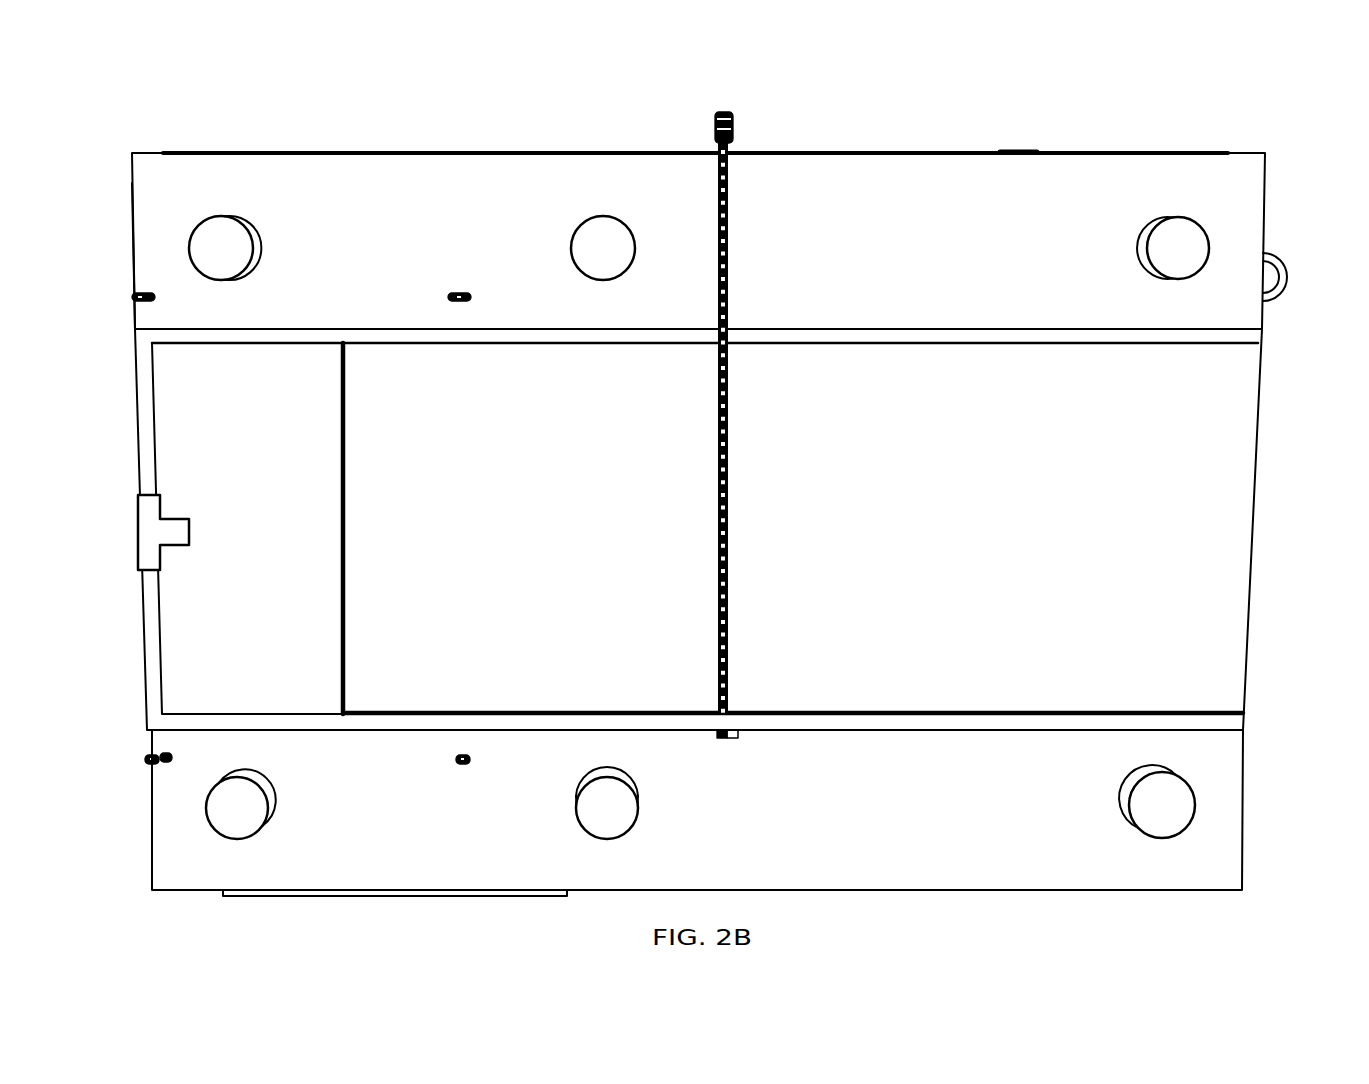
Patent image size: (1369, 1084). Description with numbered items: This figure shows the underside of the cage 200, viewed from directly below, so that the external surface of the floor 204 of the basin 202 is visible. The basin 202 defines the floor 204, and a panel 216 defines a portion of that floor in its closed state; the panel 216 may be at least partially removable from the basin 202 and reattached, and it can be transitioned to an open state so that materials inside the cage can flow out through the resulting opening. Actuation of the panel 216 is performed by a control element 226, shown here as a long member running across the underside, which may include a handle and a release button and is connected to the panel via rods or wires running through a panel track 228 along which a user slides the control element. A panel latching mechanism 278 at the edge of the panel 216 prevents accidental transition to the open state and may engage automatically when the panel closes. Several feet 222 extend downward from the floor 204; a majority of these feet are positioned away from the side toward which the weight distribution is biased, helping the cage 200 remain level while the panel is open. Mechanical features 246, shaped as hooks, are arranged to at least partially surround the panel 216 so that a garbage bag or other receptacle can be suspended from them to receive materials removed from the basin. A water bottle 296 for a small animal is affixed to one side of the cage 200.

The cage 200 is at (956, 96).
The basin 202 is at (132, 183).
The floor 204 is at (155, 248).
The panel 216 is at (175, 638).
The feet 222 is at (220, 237).
The control element 226 is at (733, 128).
The panel track 228 is at (553, 335).
The mechanical features 246 is at (460, 293).
The panel latching mechanism 278 is at (150, 532).
The water bottle 296 is at (1272, 277).